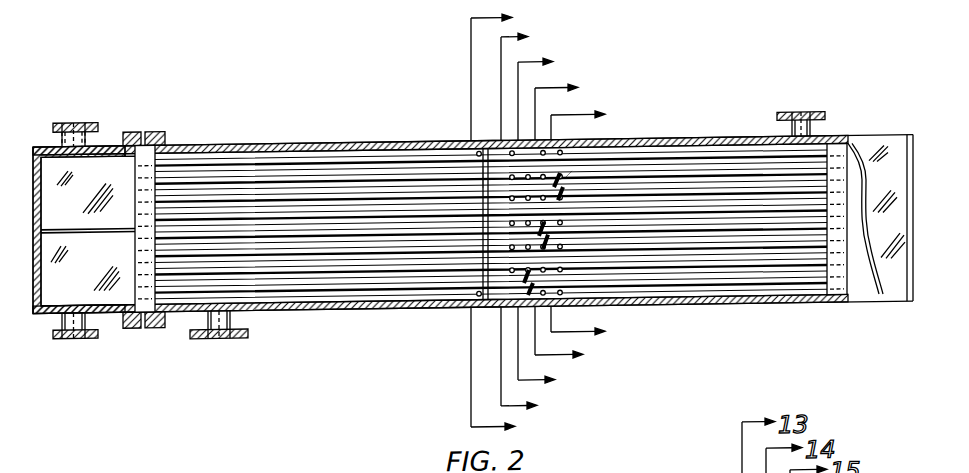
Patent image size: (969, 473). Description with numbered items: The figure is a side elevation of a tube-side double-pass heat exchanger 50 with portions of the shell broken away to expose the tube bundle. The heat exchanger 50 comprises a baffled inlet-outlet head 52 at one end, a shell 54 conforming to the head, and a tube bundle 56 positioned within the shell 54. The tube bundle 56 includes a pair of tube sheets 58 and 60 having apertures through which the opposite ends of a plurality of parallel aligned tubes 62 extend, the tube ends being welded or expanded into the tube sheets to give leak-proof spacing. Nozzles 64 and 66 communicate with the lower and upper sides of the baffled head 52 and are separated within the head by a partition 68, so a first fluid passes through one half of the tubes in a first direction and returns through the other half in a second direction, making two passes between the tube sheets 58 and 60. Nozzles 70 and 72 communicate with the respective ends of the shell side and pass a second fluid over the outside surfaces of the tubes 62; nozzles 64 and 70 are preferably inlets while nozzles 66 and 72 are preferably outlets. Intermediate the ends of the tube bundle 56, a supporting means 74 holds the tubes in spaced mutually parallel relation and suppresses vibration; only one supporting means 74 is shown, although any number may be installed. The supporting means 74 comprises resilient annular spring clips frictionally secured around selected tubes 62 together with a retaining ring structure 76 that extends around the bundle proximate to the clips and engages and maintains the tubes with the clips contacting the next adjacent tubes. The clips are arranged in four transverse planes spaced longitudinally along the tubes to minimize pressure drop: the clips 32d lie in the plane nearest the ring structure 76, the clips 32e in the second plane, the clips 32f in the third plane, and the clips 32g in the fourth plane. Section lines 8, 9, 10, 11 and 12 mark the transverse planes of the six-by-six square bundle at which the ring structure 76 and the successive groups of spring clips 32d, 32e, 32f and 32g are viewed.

The heat exchanger 50 is at (872, 146).
The baffled inlet-outlet head 52 is at (38, 148).
The shell 54 is at (192, 148).
The tube bundle 56 is at (686, 148).
The tube sheet 58 is at (150, 157).
The tube sheet 60 is at (832, 162).
The tubes 62 is at (223, 221).
The nozzle 64 is at (80, 340).
The nozzle 66 is at (80, 124).
The partition 68 is at (80, 236).
The nozzle 70 is at (225, 342).
The nozzle 72 is at (795, 123).
The supporting means 74 is at (572, 179).
The ring structure 76 is at (483, 162).
The spring clips 32d is at (483, 184).
The spring clips 32e is at (534, 291).
The spring clips 32f is at (549, 245).
The spring clips 32g is at (565, 198).
The section line 8- 8 is at (501, 229).
The section line 9- 9 is at (527, 227).
The section line 10- 10 is at (553, 229).
The section line 11- 11 is at (576, 225).
The section line 12- 12 is at (595, 226).